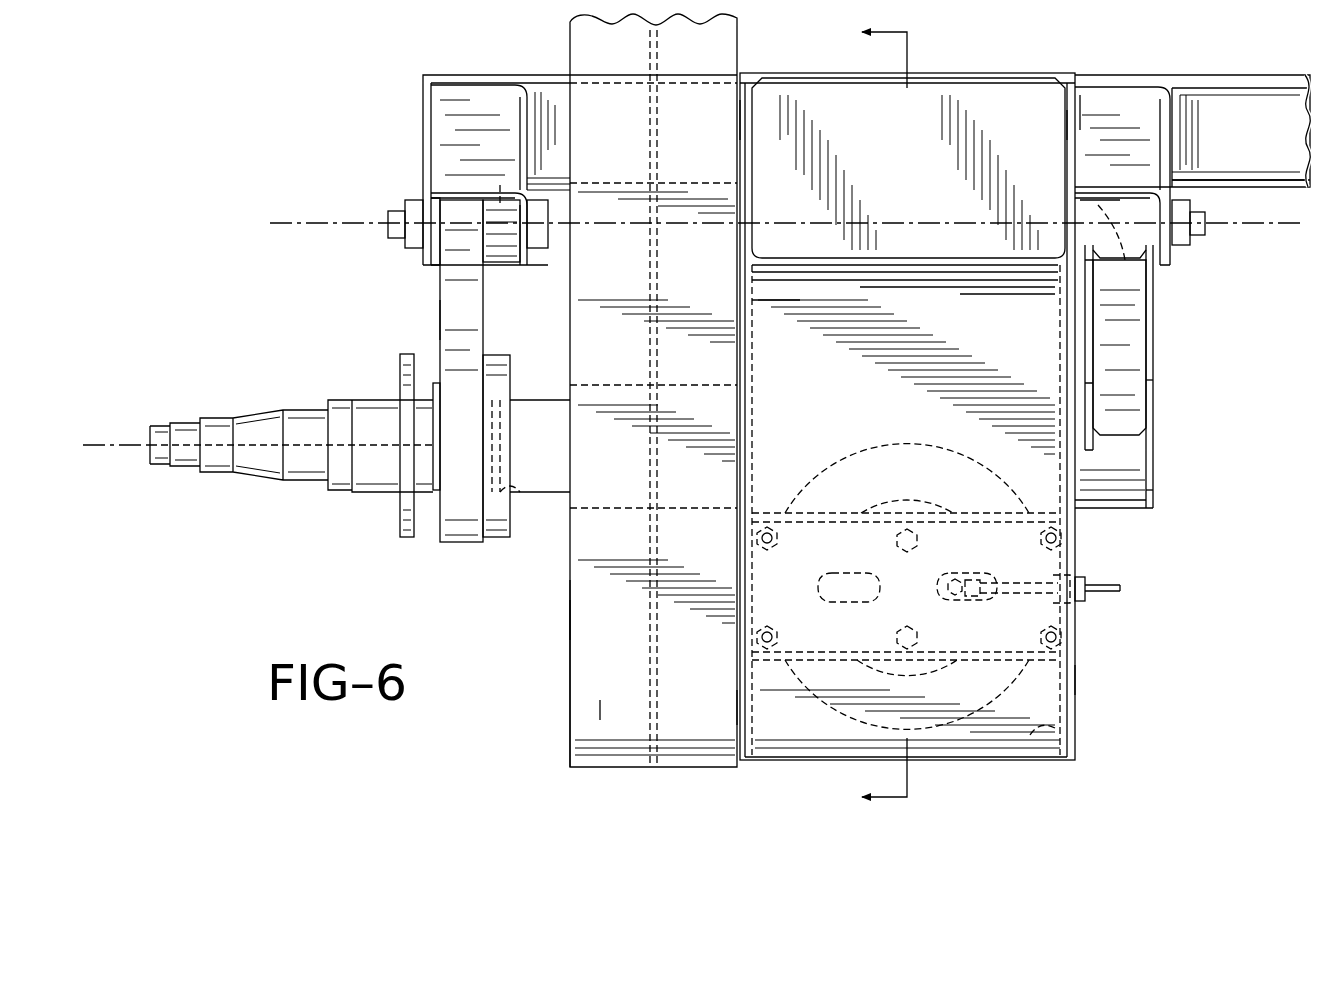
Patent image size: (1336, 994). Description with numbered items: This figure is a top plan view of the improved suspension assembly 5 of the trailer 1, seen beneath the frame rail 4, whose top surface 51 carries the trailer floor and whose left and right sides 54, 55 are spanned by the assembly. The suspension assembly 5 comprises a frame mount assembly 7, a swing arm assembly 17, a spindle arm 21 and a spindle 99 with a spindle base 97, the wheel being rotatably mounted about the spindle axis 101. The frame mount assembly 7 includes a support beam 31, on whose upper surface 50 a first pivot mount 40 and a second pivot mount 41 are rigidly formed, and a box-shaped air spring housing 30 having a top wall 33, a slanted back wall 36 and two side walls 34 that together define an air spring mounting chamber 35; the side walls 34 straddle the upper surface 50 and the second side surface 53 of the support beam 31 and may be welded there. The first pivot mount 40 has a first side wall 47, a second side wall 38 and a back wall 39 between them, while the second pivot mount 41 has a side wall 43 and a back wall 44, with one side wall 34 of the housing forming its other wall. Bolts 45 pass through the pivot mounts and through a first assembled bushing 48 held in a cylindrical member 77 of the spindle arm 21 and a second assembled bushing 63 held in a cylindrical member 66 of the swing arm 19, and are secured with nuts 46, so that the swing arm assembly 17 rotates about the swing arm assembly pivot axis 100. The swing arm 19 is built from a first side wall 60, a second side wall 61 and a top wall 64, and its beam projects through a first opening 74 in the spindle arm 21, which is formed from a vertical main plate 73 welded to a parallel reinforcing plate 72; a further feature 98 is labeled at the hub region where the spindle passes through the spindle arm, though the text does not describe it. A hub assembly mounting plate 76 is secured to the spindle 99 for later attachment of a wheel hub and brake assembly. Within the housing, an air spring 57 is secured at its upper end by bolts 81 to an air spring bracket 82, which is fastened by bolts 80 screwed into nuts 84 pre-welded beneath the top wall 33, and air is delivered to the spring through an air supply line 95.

The conveyor system 1 is at (262, 90).
The frame rail 4 is at (566, 610).
The suspension assembly 5 is at (1184, 640).
The frame mount assembly 7 is at (375, 33).
The swing arm assembly 17 is at (1170, 490).
The swing arm 19 is at (1160, 388).
The spindle arm 21 is at (436, 320).
The air spring housing 30 is at (1082, 706).
The support beam 31 is at (1276, 78).
The top wall 33 is at (818, 313).
The side wall 34 is at (740, 122).
The air spring mounting chamber 35 is at (1030, 735).
The slanted back wall 36 is at (1003, 98).
The second side wall 38 is at (530, 140).
The back wall 39 is at (478, 105).
The first pivot mount 40 is at (428, 126).
The second pivot mount 41 is at (1100, 100).
The side wall 43 is at (1172, 136).
The back wall 44 is at (1125, 108).
The bolt 45 is at (1198, 232).
The nut 46 is at (1180, 250).
The first side wall 47 is at (420, 150).
The assembled bushing 48 is at (500, 198).
The upper surface 50 is at (553, 110).
The top surface 51 is at (600, 712).
The second side surface 53 is at (1238, 188).
The left side 54 is at (570, 675).
The right side 55 is at (738, 50).
The air spring 57 is at (812, 492).
The first side wall 60 is at (1157, 455).
The second side wall 61 is at (1092, 335).
The assembled bushing 63 is at (1115, 215).
The top wall 64 is at (1125, 350).
The cylindrical member 66 is at (1098, 210).
The reinforcing plate 72 is at (495, 540).
The vertical main plate 73 is at (458, 545).
The first opening 74 is at (510, 500).
The hub assembly mounting plate 76 is at (405, 520).
The cylindrical member 77 is at (500, 258).
The bolt 80 is at (760, 538).
The bolt 81 is at (905, 528).
The air spring bracket 82 is at (835, 512).
The nut 84 is at (780, 545).
The air supply line 95 is at (1115, 584).
The spindle base 97 is at (428, 425).
The shaft bore 98 is at (490, 402).
The spindle 99 is at (263, 463).
The swing arm assembly pivot axis 100 is at (300, 228).
The spindle axis 101 is at (102, 447).